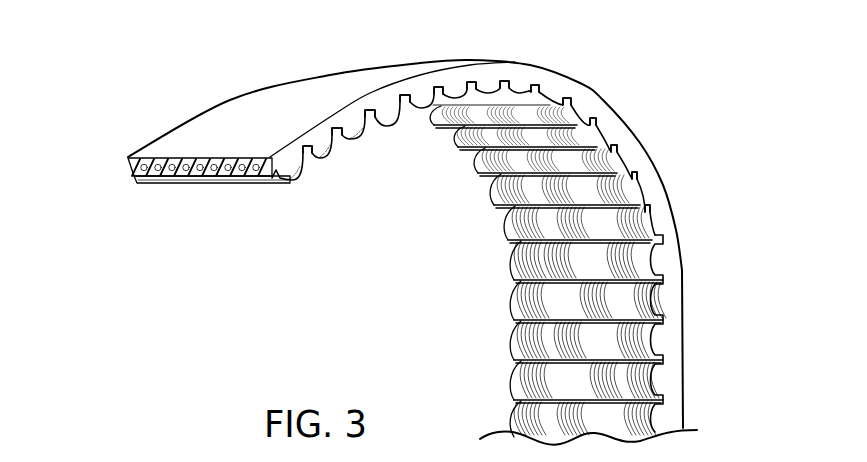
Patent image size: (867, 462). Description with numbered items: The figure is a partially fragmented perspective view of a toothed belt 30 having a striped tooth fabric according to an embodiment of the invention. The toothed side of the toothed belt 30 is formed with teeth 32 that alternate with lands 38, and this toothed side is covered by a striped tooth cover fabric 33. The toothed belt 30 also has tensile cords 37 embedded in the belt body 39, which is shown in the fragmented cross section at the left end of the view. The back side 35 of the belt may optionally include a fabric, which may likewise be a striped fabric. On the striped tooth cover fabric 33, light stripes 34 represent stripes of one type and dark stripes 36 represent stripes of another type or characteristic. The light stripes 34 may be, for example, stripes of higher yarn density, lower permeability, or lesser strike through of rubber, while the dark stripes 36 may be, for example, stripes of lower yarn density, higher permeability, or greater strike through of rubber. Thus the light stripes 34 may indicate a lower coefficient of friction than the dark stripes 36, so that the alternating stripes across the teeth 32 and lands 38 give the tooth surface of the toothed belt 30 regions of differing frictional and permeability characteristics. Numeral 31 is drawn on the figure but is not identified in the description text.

The toothed belt 30 is at (652, 85).
The belt body 31 is at (365, 154).
The teeth 32 is at (332, 160).
The striped tooth cover fabric 33 is at (660, 300).
The light stripes 34 is at (628, 222).
The back side 35 is at (255, 112).
The dark stripes 36 is at (530, 260).
The tensile cords 37 is at (228, 185).
The lands 38 is at (404, 100).
The belt body 39 is at (127, 172).